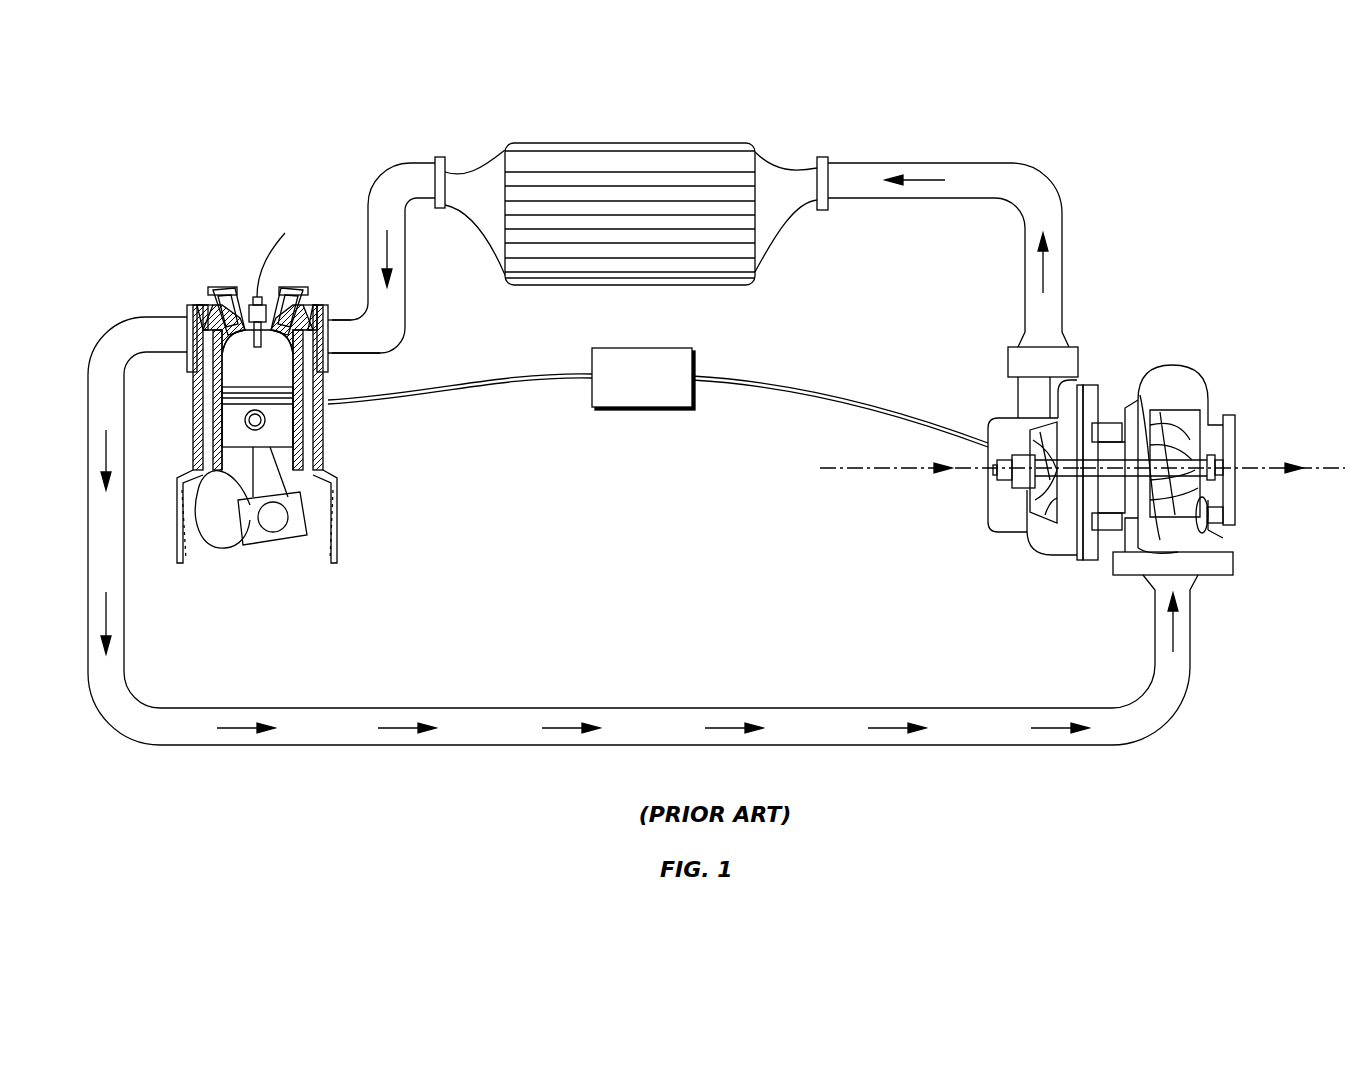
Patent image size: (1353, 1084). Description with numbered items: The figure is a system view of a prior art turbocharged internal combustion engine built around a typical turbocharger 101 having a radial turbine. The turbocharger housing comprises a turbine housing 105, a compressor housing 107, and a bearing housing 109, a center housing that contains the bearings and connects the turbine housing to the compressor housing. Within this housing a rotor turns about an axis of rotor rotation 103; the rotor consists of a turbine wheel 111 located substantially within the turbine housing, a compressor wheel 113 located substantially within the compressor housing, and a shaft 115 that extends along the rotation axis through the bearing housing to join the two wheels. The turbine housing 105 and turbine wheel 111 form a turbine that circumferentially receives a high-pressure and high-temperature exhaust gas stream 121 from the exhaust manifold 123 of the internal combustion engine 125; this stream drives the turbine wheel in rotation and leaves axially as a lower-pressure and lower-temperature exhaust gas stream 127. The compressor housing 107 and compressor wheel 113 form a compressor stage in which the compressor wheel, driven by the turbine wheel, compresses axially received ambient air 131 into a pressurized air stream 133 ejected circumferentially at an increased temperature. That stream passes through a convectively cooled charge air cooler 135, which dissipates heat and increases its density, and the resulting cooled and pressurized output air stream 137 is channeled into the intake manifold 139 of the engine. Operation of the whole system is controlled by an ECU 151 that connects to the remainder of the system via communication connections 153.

The turbocharger 101 is at (1085, 385).
The axis of rotor rotation 103 is at (1327, 465).
The turbine housing 105 is at (1195, 385).
The compressor housing 107 is at (993, 420).
The bearing housing 109 is at (1118, 430).
The turbine wheel 111 is at (1172, 458).
The compressor wheel 113 is at (1030, 493).
The shaft 115 is at (1135, 458).
The high-pressure and high-temperature exhaust gas stream 121 is at (731, 729).
The exhaust manifold 123 is at (230, 325).
The internal combustion engine 125 is at (275, 425).
The lower-pressure and lower-temperature exhaust gas stream 127 is at (1263, 465).
The ambient air 131 is at (862, 465).
The pressurized air stream 133 is at (923, 180).
The charge air cooler 135 is at (625, 170).
The cooled and pressurized output air stream 137 is at (385, 255).
The intake manifold 139 is at (317, 353).
The ECU 151 is at (641, 347).
The communication connections 153 is at (740, 388).